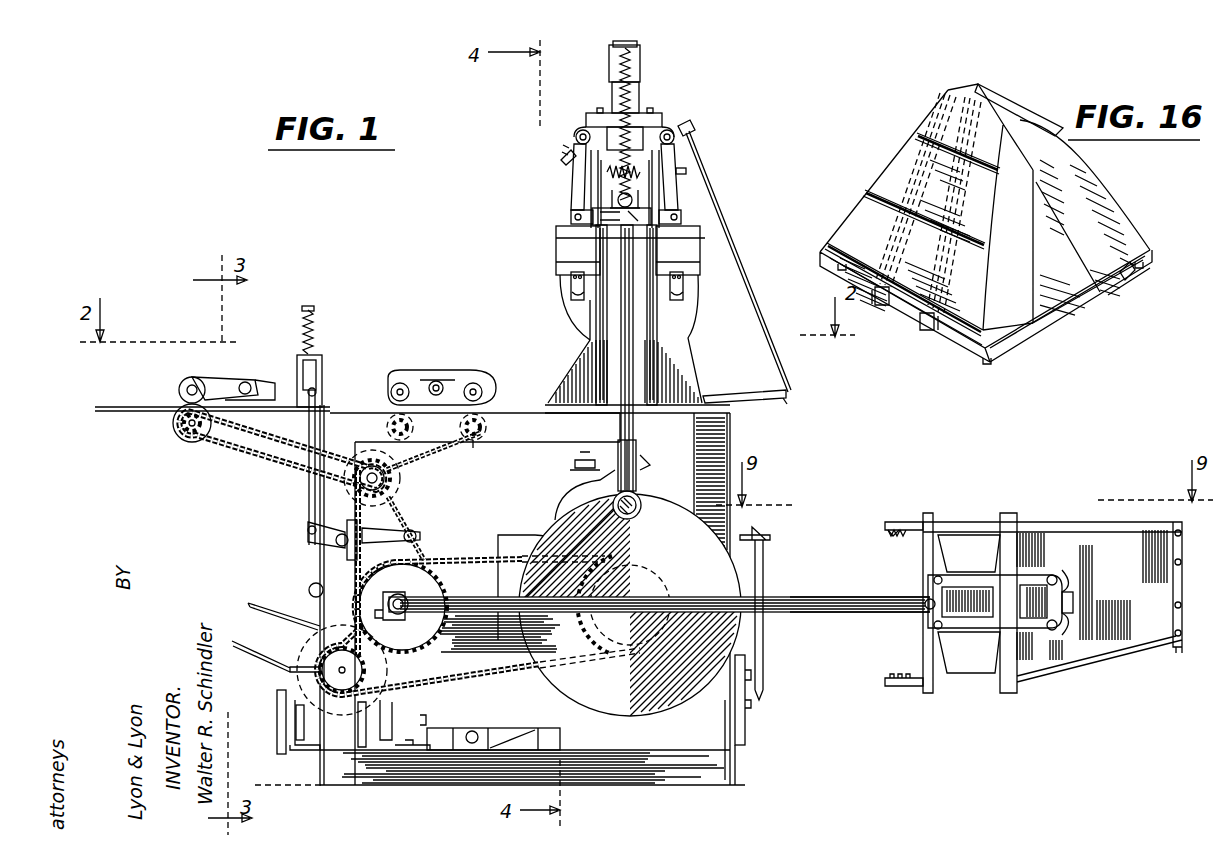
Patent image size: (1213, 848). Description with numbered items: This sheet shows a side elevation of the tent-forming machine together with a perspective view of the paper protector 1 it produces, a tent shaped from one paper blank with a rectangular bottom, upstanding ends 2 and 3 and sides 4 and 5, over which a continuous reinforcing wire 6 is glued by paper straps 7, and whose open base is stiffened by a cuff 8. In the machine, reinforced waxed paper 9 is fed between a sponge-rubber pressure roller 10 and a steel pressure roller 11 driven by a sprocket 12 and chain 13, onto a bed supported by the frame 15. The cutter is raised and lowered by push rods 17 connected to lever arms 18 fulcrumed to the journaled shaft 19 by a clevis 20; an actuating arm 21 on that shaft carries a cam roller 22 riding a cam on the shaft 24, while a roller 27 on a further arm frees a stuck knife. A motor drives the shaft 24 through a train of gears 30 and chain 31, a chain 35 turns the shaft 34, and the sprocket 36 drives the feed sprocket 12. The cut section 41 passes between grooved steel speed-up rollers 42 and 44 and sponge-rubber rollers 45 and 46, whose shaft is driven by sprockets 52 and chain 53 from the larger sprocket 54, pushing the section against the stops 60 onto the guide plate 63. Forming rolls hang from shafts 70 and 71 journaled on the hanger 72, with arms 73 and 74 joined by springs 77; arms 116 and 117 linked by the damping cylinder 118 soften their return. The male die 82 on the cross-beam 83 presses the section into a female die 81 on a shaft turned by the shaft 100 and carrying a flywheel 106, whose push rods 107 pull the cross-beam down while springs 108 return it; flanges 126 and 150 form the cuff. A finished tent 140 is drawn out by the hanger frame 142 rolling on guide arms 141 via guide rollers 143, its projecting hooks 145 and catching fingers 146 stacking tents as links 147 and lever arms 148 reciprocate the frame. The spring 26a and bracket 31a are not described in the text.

In FIG. 16, the paper protector 1 is at (1022, 335).
In FIG. 16, the end 2 is at (1108, 195).
In FIG. 16, the end 3 is at (902, 130).
In FIG. 16, the side 4 is at (918, 303).
In FIG. 16, the side 5 is at (1030, 118).
In FIG. 16, the reinforcing wire 6 is at (900, 230).
In FIG. 16, the paper strap 7 is at (945, 265).
In FIG. 16, the cuff 8 is at (1122, 280).
In FIG. 1, the waxed paper 9 is at (130, 407).
In FIG. 1, the pressure roller 10 is at (196, 380).
In FIG. 1, the pressure roller 11 is at (180, 432).
In FIG. 1, the sprocket 12 is at (194, 432).
In FIG. 1, the chain 13 is at (285, 460).
In FIG. 1, the frame 15 is at (742, 694).
In FIG. 1, the push rod 17 is at (308, 508).
In FIG. 1, the lever arm 18 is at (325, 540).
In FIG. 1, the journaled shaft 19 is at (340, 532).
In FIG. 1, the clevis 20 is at (350, 538).
In FIG. 1, the actuating arm 21 is at (370, 550).
In FIG. 1, the cam roller 22 is at (415, 548).
In FIG. 1, the shaft 24 is at (402, 600).
In FIG. 1, the spring 26a is at (316, 338).
In FIG. 1, the roller 27 is at (306, 594).
In FIG. 1, the train of gears 30 is at (306, 654).
In FIG. 1, the chain 31 is at (345, 690).
In FIG. 1, the bracket 31a is at (280, 690).
In FIG. 1, the shaft 34 is at (372, 470).
In FIG. 1, the chain 35 is at (410, 518).
In FIG. 1, the sprocket 36 is at (380, 476).
In FIG. 1, the section 41 is at (754, 400).
In FIG. 1, the speed-up roller 42 is at (388, 393).
In FIG. 1, the speed-up roller 44 is at (484, 388).
In FIG. 1, the speed-up roller 45 is at (372, 420).
In FIG. 1, the speed-up roller 46 is at (478, 442).
In FIG. 1, the sprocket 52 is at (408, 430).
In FIG. 1, the chain 53 is at (440, 456).
In FIG. 1, the sprocket 54 is at (392, 494).
In FIG. 1, the stop 60 is at (740, 280).
In FIG. 1, the guide plate 63 is at (765, 404).
In FIG. 1, the shaft 70 is at (583, 130).
In FIG. 1, the shaft 71 is at (668, 130).
In FIG. 1, the hanger 72 is at (650, 255).
In FIG. 1, the arm 73 is at (565, 165).
In FIG. 1, the arm 74 is at (685, 171).
In FIG. 1, the spring 77 is at (612, 175).
In FIG. 1, the female die 81 is at (568, 498).
In FIG. 1, the male die 82 is at (688, 318).
In FIG. 1, the cross-beam 83 is at (640, 200).
In FIG. 1, the shaft 100 is at (640, 588).
In FIG. 1, the flywheel 106 is at (640, 740).
In FIG. 1, the push rod 107 is at (622, 332).
In FIG. 1, the spring 108 is at (630, 97).
In FIG. 1, the arm 116 is at (572, 158).
In FIG. 1, the arm 117 is at (672, 160).
In FIG. 1, the damping cylinder 118 is at (600, 220).
In FIG. 1, the flange 126 is at (576, 290).
In FIG. 1, the tent 140 is at (764, 532).
In FIG. 1, the guide arm 141 is at (868, 598).
In FIG. 1, the hanger frame 142 is at (1005, 570).
In FIG. 1, the guide roller 143 is at (1062, 578).
In FIG. 1, the projecting hook 145 is at (902, 522).
In FIG. 1, the catching finger 146 is at (901, 534).
In FIG. 1, the link 147 is at (812, 598).
In FIG. 1, the lever arm 148 is at (462, 600).
In FIG. 1, the flange 150 is at (388, 618).